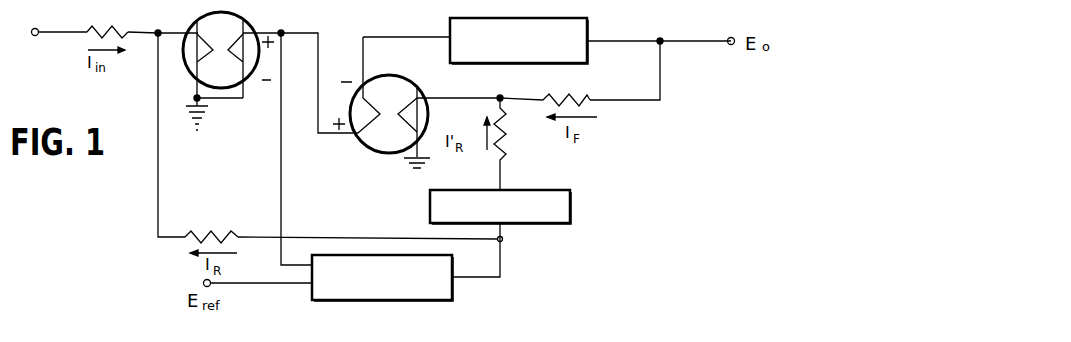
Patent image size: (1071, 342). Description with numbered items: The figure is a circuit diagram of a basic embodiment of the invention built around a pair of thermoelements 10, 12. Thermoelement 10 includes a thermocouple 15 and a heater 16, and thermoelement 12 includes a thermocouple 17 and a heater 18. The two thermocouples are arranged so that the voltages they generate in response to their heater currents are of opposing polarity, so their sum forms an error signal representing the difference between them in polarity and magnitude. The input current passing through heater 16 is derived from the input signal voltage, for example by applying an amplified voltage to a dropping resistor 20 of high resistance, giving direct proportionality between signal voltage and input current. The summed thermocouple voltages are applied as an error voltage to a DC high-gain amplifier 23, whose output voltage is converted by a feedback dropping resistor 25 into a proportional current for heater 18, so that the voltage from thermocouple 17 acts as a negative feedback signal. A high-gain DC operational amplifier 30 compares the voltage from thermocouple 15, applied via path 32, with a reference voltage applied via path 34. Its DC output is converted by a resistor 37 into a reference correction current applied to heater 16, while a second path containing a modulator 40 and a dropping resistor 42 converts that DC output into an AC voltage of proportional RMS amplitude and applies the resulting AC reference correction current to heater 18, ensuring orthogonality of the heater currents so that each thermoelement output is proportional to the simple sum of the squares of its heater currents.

The thermoelement 10 is at (229, 65).
The thermoelement 12 is at (389, 107).
The thermocouple 15 is at (230, 12).
The heater 16 is at (195, 22).
The thermocouple 17 is at (378, 80).
The heater 18 is at (406, 84).
The dropping resistor 20 is at (97, 24).
The DC high-gain amplifier 23 is at (450, 25).
The feedback dropping resistor 25 is at (575, 98).
The DC operational amplifier 30 is at (375, 301).
The path 32 is at (282, 178).
The path 34 is at (270, 284).
The resistor 37 is at (191, 233).
The modulator 40 is at (571, 206).
The dropping resistor 42 is at (506, 145).